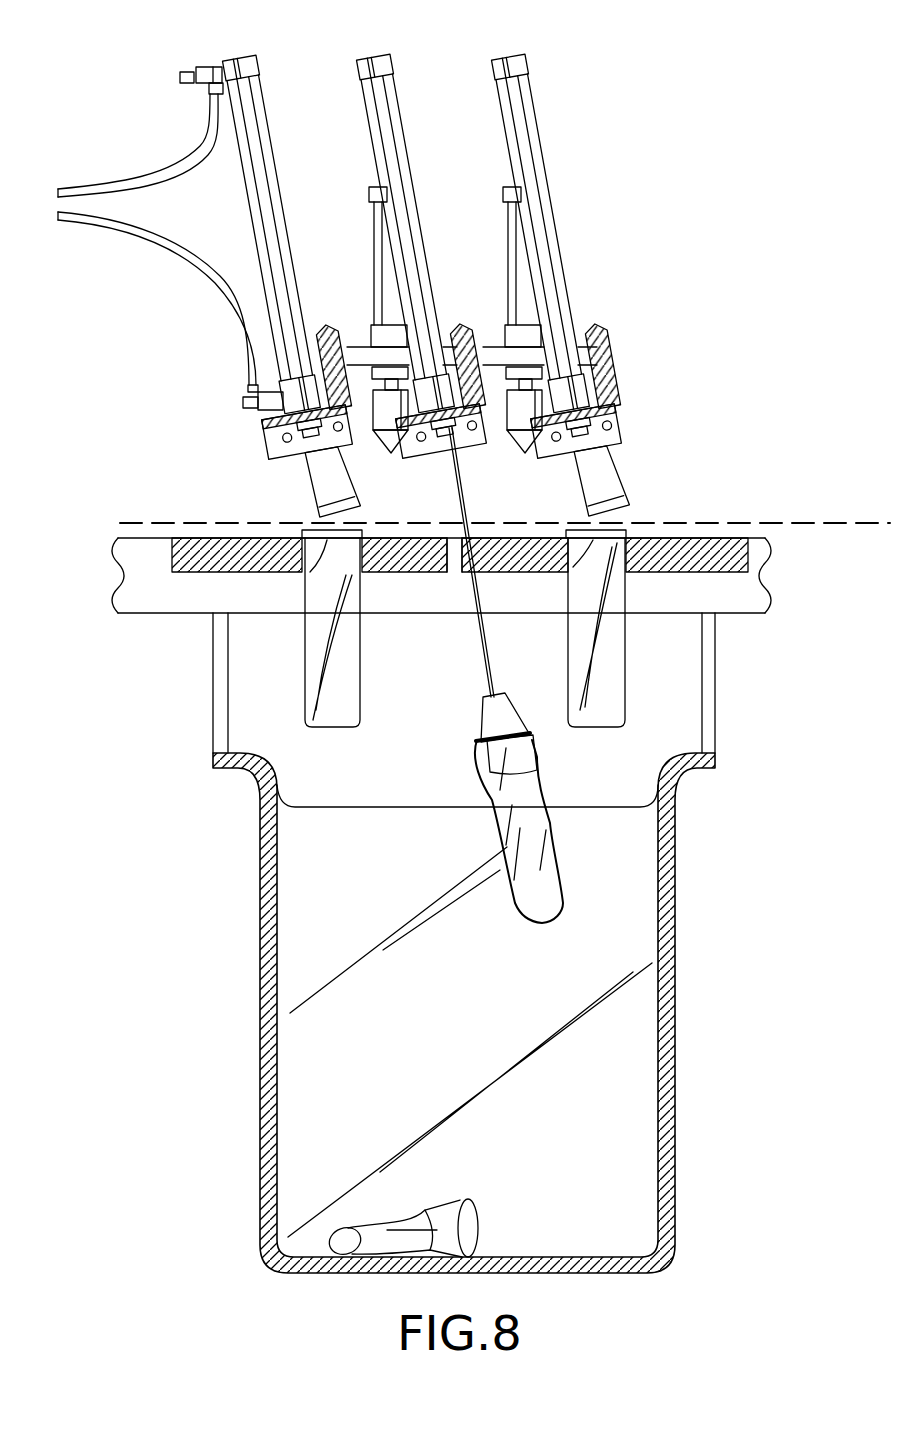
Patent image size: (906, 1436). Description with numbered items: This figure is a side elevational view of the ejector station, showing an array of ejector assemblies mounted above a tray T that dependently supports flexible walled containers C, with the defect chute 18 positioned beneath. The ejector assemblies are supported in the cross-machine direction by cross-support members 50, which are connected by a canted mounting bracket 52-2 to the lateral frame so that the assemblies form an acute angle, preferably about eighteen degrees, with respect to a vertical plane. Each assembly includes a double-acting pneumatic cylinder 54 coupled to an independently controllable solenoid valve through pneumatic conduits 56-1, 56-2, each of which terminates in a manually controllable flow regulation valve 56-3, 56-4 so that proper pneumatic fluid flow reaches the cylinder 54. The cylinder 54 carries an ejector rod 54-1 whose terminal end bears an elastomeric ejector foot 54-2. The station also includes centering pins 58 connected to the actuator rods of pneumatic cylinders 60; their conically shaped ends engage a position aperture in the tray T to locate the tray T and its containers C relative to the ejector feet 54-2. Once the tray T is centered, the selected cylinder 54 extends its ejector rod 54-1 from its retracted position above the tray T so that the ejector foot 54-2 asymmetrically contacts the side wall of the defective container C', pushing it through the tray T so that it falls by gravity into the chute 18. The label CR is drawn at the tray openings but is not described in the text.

The double-acting pneumatic cylinder 54 is at (262, 155).
The ejector rod 54-1 is at (447, 450).
The elastomeric ejector foot 54-2 is at (305, 483).
The cross-support member 50 is at (333, 335).
The mounting bracket 52-2 is at (270, 447).
The pneumatic conduit 56-1 is at (217, 277).
The pneumatic conduit 56-2 is at (150, 183).
The manually controllable flow regulation valve 56-3 is at (243, 403).
The manually controllable flow regulation valve 56-4 is at (217, 66).
The centering pin 58 is at (380, 413).
The pneumatic cylinder 60 is at (383, 242).
The tray T is at (737, 536).
The cylinder receptacle CR is at (326, 570).
The container C is at (455, 632).
The defective container C' is at (504, 862).
The defect chute 18 is at (360, 1032).